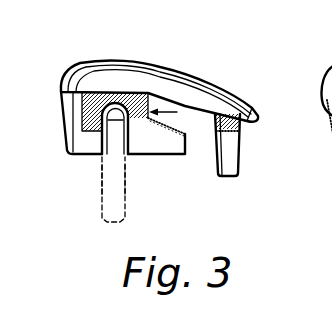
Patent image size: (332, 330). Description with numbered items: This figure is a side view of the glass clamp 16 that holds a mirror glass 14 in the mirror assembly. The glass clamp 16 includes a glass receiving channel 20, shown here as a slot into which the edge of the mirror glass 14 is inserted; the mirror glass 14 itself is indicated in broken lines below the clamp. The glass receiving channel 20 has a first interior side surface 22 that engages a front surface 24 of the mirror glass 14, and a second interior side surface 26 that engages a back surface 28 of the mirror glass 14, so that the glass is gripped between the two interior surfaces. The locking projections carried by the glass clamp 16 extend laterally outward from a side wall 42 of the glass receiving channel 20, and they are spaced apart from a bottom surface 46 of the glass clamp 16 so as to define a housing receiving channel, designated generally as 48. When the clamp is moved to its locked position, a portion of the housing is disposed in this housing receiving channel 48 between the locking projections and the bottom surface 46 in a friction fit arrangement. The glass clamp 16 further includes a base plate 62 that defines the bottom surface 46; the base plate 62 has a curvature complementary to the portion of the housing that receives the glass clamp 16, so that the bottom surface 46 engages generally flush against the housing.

The mirror glass 14 is at (123, 207).
The glass clamp 16 is at (142, 64).
The glass receiving channel 20 is at (116, 113).
The first interior side surface 22 is at (103, 135).
The front surface 24 is at (100, 173).
The second interior side surface 26 is at (129, 136).
The back surface 28 is at (127, 170).
The side wall 42 is at (153, 108).
The bottom surface 46 is at (191, 112).
The housing receiving channel 48 is at (241, 128).
The base plate 62 is at (251, 102).